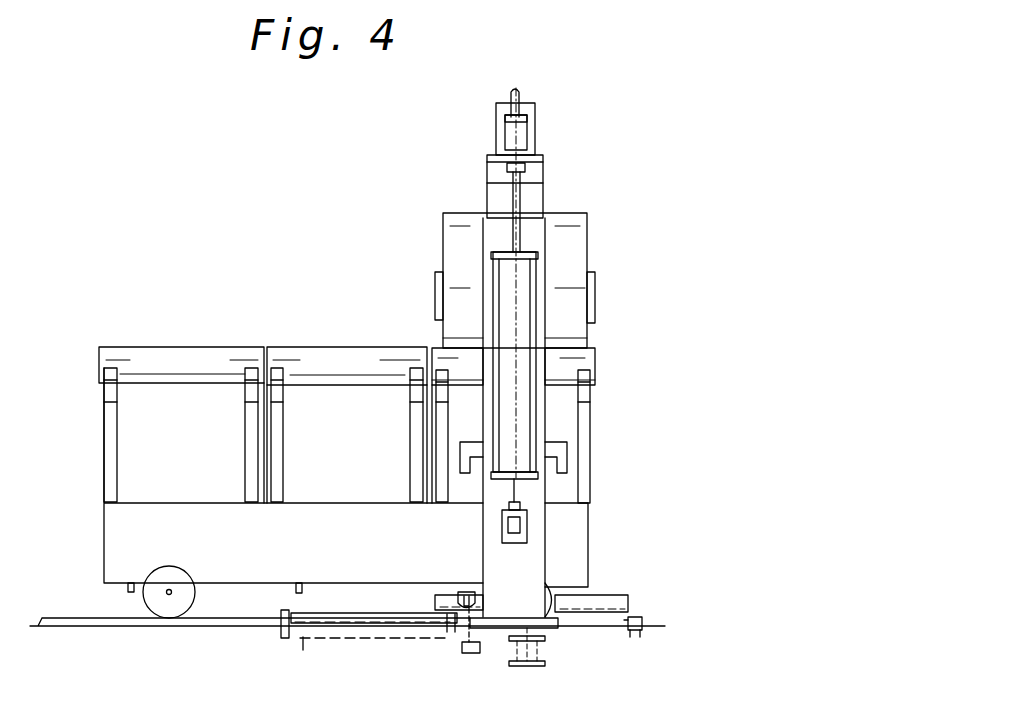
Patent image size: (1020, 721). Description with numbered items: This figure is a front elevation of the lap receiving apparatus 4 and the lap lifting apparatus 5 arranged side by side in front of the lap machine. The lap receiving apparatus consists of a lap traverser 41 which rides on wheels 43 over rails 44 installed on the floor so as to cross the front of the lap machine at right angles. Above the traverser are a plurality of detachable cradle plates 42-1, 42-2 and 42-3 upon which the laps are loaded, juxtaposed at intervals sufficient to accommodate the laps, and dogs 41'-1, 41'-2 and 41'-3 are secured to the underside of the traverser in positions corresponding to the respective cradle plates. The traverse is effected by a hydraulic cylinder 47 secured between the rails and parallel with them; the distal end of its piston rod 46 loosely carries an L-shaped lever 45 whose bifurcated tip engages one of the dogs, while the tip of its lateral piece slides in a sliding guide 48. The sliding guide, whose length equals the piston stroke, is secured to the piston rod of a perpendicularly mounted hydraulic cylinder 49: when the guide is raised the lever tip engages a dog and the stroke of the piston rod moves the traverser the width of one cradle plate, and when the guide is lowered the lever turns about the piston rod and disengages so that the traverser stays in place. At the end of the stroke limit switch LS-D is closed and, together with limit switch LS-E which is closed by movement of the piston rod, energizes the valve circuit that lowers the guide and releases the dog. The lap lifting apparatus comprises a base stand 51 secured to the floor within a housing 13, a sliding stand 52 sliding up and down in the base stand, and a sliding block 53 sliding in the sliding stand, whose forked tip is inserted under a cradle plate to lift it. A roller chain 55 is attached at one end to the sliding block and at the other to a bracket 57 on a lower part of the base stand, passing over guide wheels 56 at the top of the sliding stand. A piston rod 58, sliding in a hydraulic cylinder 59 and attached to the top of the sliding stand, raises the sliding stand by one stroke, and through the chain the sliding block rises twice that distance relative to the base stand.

The carriage assembly 4 is at (91, 336).
The elevator head assembly 5 is at (466, 168).
The housing 13 is at (578, 266).
The lap traverser 41 is at (324, 477).
The dog 41'-1 is at (453, 577).
The dog 41'-2 is at (259, 600).
The dog 41'-3 is at (92, 599).
The cradle plate 42-1 is at (580, 362).
The cradle plate 42-2 is at (335, 358).
The cradle plate 42-3 is at (175, 358).
The wheels 43 is at (165, 606).
The rails 44 is at (55, 628).
The L-shaped lever 45 is at (443, 620).
The piston rod 46 is at (413, 624).
The hydraulic cylinder 47 is at (303, 650).
The sliding guide 48 is at (587, 613).
The hydraulic cylinder 49 is at (530, 666).
The base stand 51 is at (537, 567).
The sliding stand 52 is at (527, 190).
The sliding block 53 is at (564, 456).
The roller chain 55 is at (520, 147).
The guide wheels 56 is at (520, 98).
The bracket 57 is at (527, 530).
The piston rod 58 is at (520, 211).
The hydraulic cylinder 59 is at (523, 278).
The limit switch LS-E is at (469, 653).
The limit switch LS-D is at (634, 640).